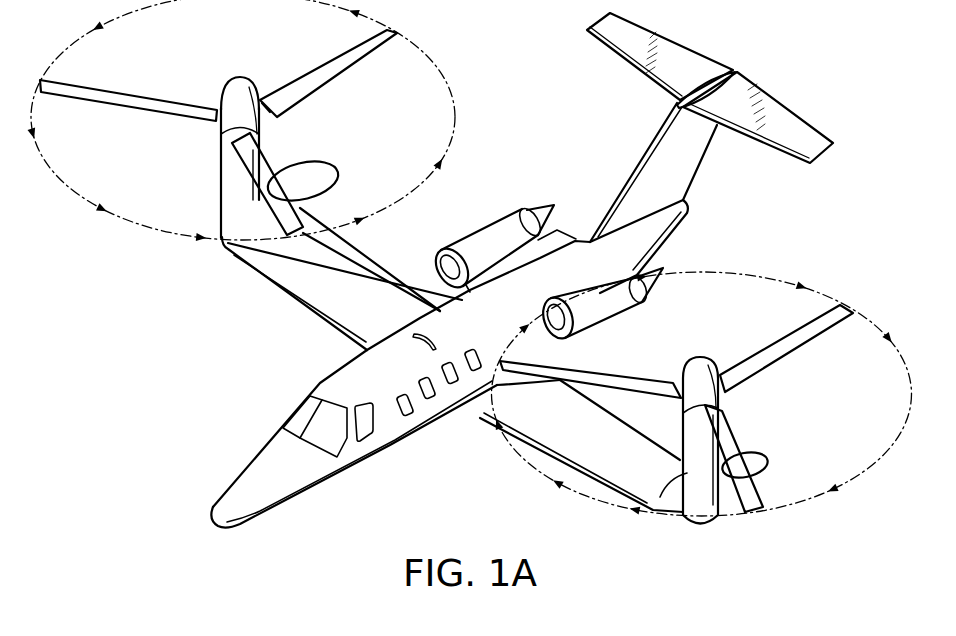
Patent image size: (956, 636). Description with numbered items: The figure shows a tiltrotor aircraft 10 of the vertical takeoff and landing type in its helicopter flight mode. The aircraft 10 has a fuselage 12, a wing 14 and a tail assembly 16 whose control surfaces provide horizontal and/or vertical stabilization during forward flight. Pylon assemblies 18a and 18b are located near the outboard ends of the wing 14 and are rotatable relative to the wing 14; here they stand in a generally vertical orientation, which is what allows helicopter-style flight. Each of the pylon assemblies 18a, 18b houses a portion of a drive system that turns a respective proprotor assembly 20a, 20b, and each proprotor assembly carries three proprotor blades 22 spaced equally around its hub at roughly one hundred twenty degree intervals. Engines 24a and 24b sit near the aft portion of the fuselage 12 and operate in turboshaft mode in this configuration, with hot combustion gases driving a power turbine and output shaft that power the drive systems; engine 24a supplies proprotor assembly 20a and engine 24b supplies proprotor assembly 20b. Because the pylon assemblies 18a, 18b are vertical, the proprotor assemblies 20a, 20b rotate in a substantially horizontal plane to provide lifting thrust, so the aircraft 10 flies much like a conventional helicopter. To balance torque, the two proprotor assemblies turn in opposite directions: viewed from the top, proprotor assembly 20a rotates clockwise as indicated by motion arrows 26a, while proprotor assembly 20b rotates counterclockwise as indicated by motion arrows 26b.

The tiltrotor aircraft 10 is at (803, 73).
The fuselage 12 is at (308, 487).
The wing 14 is at (358, 270).
The tail assembly 16 is at (687, 62).
The pylon assembly 18a is at (693, 470).
The pylon assembly 18b is at (222, 192).
The proprotor assembly 20a is at (786, 365).
The proprotor assembly 20b is at (331, 96).
The proprotor blades 22 is at (323, 70).
The engine 24a is at (613, 310).
The engine 24b is at (502, 230).
The motion arrows 26a is at (728, 273).
The motion arrows 26b is at (456, 85).